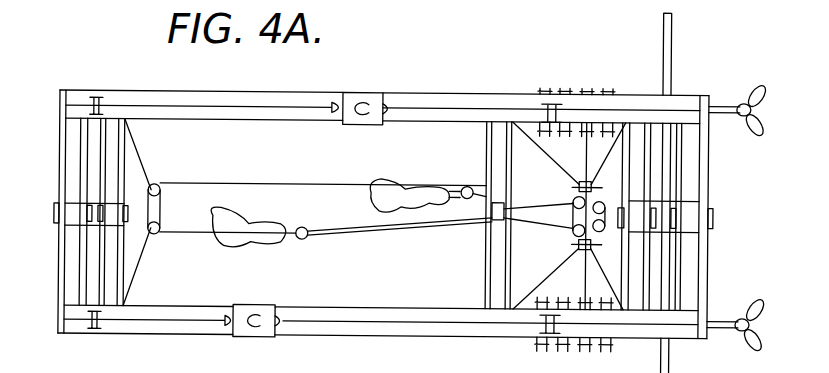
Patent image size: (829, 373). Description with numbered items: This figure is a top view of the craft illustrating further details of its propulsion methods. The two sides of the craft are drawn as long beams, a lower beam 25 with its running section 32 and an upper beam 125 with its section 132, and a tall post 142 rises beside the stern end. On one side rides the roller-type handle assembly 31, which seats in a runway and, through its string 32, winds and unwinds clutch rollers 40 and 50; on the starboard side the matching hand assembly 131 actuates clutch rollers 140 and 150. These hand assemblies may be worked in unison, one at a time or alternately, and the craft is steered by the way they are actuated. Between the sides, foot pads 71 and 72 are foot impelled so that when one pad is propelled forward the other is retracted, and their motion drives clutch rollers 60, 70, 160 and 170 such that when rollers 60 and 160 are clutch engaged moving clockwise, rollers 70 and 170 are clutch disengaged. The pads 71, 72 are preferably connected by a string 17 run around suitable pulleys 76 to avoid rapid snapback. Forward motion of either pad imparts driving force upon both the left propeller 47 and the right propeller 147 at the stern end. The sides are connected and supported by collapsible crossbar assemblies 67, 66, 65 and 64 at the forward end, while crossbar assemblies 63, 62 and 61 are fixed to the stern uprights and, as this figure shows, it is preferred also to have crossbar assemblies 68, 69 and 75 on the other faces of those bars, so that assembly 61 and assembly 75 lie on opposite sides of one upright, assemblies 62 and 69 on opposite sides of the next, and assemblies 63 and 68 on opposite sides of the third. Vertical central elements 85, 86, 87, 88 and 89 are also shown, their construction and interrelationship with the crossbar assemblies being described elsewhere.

The string 17 is at (290, 180).
The lower frame beam 25 is at (148, 337).
The handle assembly 31 is at (258, 301).
The string 32 is at (432, 337).
The clutch roller 40 is at (540, 347).
The left propeller 47 is at (765, 322).
The clutch roller 50 is at (564, 347).
The clutch roller 60 is at (587, 347).
The crossbar assembly 61 is at (711, 146).
The crossbar assembly 62 is at (658, 128).
The crossbar assembly 63 is at (512, 148).
The crossbar assembly 64 is at (120, 145).
The crossbar assembly 65 is at (107, 127).
The crossbar assembly 66 is at (83, 163).
The crossbar assembly 67 is at (60, 135).
The crossbar assembly 68 is at (487, 142).
The crossbar assembly 69 is at (630, 128).
The clutch roller 70 is at (614, 344).
The foot pad 71 is at (424, 176).
The foot pad 72 is at (260, 220).
The crossbar assembly 75 is at (690, 305).
The pulley 76 is at (159, 184).
The vertical central element 85 is at (708, 213).
The vertical central element 86 is at (633, 223).
The vertical central element 87 is at (113, 220).
The vertical central element 88 is at (72, 217).
The vertical central element 89 is at (492, 228).
The upper frame beam 125 is at (266, 86).
The hand assembly 131 is at (365, 95).
The upper beam section 132 is at (448, 100).
The clutch roller 140 is at (538, 92).
The post 142 is at (672, 36).
The right propeller 147 is at (760, 82).
The clutch roller 150 is at (560, 88).
The clutch roller 160 is at (586, 88).
The clutch roller 170 is at (612, 88).